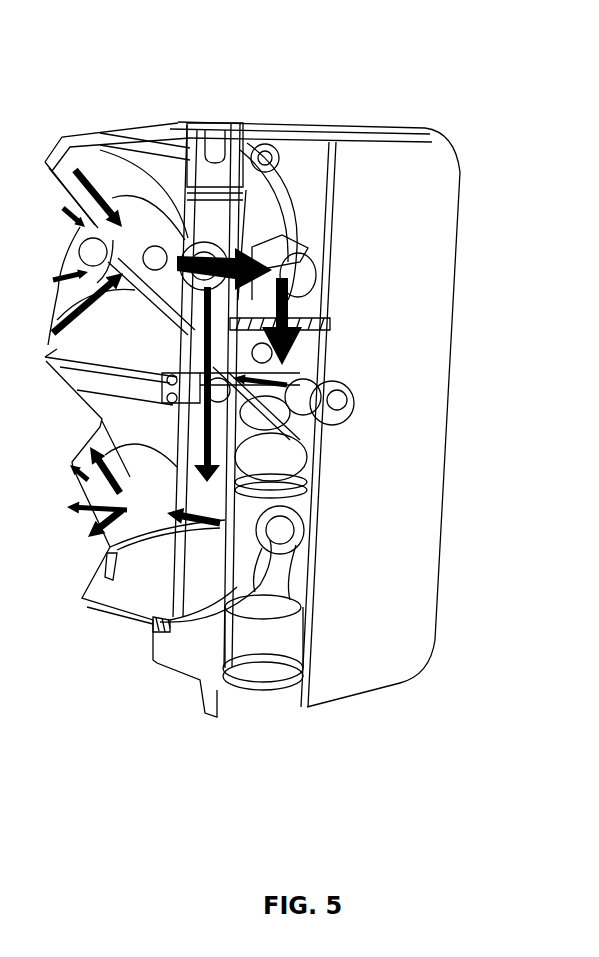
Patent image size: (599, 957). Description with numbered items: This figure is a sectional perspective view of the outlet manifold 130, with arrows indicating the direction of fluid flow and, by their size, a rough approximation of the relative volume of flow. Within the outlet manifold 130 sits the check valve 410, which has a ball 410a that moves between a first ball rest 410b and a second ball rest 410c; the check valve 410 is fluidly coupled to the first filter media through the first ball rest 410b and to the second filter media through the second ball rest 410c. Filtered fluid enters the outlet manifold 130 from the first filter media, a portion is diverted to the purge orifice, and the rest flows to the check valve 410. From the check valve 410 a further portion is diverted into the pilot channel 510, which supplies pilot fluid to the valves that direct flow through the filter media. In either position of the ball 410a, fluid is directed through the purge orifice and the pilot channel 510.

The outlet manifold 130 is at (252, 367).
The check valve 410 is at (278, 420).
The ball 410a is at (305, 465).
The first ball rest 410b is at (320, 330).
The second ball rest 410c is at (303, 487).
The pilot channel 510 is at (303, 377).